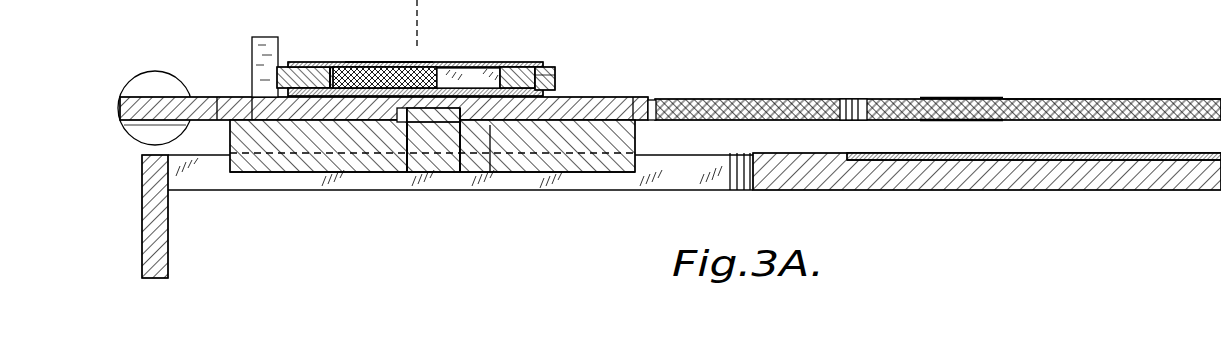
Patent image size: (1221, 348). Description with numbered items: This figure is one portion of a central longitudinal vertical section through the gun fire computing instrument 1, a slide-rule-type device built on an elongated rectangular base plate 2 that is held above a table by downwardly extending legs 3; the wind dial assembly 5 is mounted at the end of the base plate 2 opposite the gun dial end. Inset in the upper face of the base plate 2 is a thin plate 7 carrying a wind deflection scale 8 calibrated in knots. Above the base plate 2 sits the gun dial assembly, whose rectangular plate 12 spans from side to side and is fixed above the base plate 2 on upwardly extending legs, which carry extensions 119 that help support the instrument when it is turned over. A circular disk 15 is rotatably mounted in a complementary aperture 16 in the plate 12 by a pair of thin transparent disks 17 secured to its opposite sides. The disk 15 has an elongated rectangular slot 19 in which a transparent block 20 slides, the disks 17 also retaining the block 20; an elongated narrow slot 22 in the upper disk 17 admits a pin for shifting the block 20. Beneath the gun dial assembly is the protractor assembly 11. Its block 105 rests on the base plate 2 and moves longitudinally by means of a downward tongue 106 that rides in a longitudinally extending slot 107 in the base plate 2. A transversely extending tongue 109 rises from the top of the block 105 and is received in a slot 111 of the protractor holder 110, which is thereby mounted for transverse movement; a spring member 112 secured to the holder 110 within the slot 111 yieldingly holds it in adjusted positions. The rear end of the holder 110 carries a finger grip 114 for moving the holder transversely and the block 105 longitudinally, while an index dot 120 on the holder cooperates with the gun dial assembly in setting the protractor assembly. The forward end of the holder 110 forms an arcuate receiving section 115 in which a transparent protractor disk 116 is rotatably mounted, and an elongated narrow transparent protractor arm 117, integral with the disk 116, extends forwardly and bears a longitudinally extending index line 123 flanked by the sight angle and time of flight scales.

The gun fire computing instrument 1 is at (906, 202).
The base plate 2 is at (1098, 184).
The legs 3 is at (162, 255).
The wind dial assembly 5 is at (427, 30).
The thin plate 7 is at (1166, 160).
The wind deflection scale 8 is at (1144, 156).
The protractor assembly 11 is at (755, 84).
The rectangular plate 12 is at (556, 80).
The circular disk 15 is at (538, 66).
The complementary aperture 16 is at (556, 70).
The thin transparent disks 17 is at (320, 90).
The elongated rectangular slot 19 is at (520, 70).
The transparent block 20 is at (365, 66).
The elongated narrow slot 22 is at (400, 62).
The block 105 is at (520, 150).
The tongue 106 is at (355, 176).
The longitudinally extending slot 107 is at (618, 186).
The transversely extending tongue 109 is at (450, 125).
The protractor holder 110 is at (620, 100).
The slot 111 is at (477, 140).
The spring member 112 is at (404, 125).
The finger grip 114 is at (175, 84).
The arcuate receiving section 115 is at (651, 100).
The transparent protractor disk 116 is at (818, 100).
The transparent protractor arm 117 is at (1154, 100).
The extensions 119 is at (243, 62).
The index dot 120 is at (422, 98).
The index line 123 is at (1084, 98).